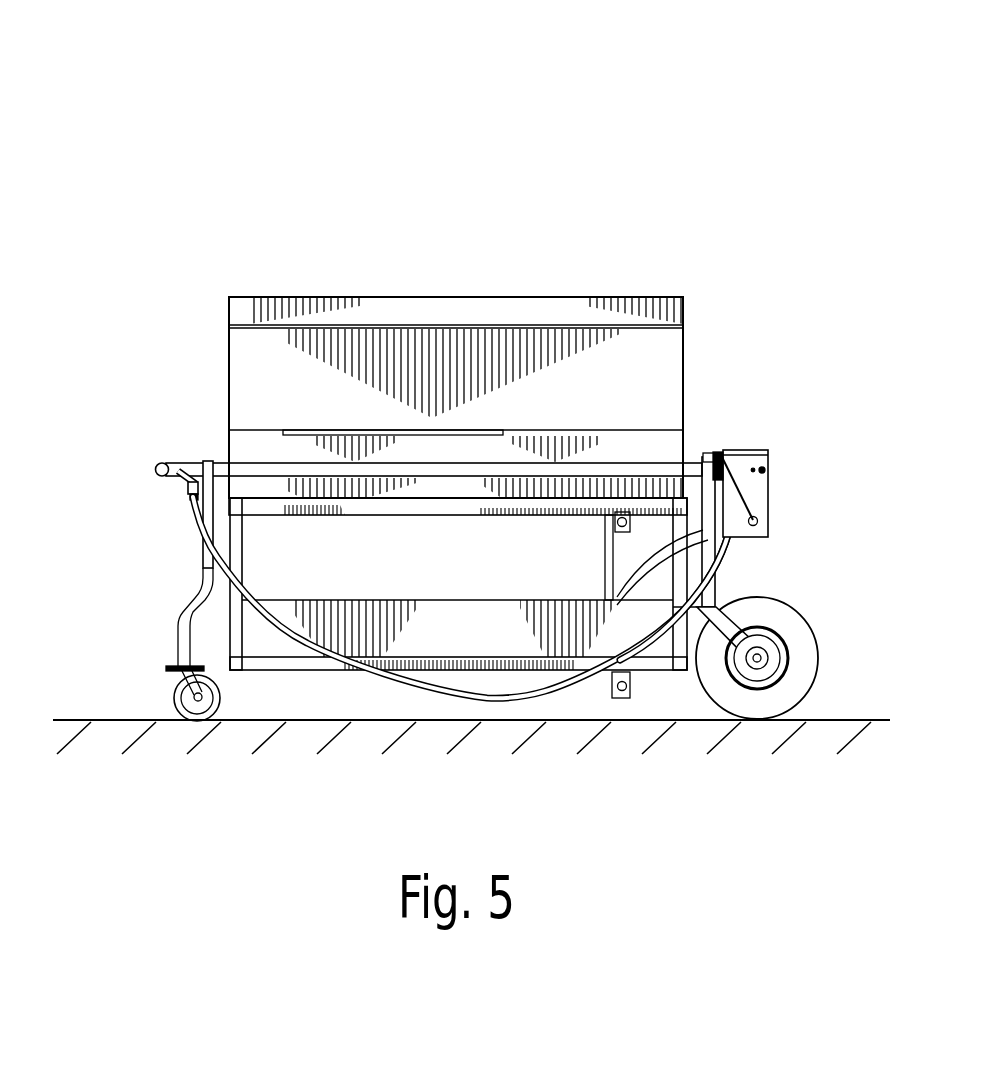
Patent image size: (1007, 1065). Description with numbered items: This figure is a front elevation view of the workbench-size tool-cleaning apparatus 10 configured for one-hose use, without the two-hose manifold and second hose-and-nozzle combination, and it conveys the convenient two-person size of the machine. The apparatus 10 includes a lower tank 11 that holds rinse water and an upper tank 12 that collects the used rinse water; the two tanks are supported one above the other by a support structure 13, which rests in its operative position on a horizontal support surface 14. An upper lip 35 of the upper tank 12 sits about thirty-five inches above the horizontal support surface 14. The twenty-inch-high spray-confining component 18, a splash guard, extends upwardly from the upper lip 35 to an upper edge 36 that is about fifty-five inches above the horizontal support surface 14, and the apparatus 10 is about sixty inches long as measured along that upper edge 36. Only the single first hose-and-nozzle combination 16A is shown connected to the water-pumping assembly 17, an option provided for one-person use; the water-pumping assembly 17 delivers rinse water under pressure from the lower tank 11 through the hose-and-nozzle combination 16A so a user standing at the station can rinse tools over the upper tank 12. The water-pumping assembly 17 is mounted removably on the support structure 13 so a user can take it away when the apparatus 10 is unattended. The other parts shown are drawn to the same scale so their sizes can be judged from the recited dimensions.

The tool-cleaning apparatus 10 is at (238, 138).
The lower tank 11 is at (257, 633).
The upper tank 12 is at (676, 450).
The support structure 13 is at (203, 460).
The horizontal support surface 14 is at (103, 718).
The first hose-and-nozzle combination 16A is at (727, 547).
The water-pumping assembly 17 is at (770, 484).
The spray-confining component 18 is at (226, 292).
The upper lip 35 is at (668, 430).
The upper edge 36 is at (683, 297).